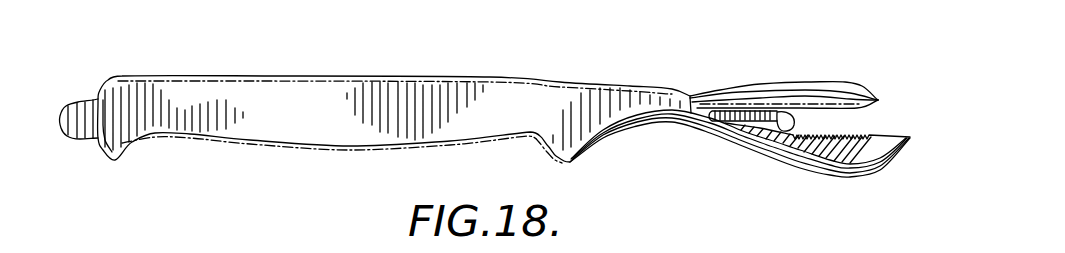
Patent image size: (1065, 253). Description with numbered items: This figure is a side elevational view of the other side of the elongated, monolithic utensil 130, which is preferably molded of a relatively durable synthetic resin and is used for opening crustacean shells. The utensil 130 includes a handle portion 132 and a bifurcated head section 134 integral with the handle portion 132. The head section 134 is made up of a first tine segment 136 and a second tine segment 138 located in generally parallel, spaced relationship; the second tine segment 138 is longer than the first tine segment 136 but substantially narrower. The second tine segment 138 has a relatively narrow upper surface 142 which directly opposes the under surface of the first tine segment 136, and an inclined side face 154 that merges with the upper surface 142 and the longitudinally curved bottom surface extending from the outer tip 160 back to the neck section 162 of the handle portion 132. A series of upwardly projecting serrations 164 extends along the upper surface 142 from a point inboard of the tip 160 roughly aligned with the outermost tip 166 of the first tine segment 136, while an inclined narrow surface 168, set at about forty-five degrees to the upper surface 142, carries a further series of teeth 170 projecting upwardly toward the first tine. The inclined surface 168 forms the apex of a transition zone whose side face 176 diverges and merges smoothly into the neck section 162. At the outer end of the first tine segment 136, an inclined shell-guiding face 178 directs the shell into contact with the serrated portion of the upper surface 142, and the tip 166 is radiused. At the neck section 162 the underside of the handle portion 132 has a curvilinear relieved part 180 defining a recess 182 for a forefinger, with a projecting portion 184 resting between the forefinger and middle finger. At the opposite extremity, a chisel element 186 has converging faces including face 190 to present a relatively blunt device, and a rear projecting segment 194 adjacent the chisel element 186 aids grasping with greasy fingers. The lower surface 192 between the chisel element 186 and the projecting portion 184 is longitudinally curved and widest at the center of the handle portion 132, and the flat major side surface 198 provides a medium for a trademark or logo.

The utensil 130 is at (483, 61).
The handle portion 132 is at (335, 73).
The bifurcated head section 134 is at (718, 84).
The first tine segment 136 is at (764, 78).
The second tine segment 138 is at (795, 176).
The upper surface 142 is at (886, 137).
The side face 154 is at (833, 153).
The outer tip 160 is at (910, 139).
The neck section 162 is at (681, 97).
The serrations 164 is at (829, 137).
The outermost tip 166 is at (880, 104).
The inclined narrow surface 168 is at (782, 125).
The serrations or teeth 170 is at (786, 131).
The side face 176 is at (748, 122).
The inclined shell-guiding face 178 is at (888, 105).
The curvilinear relieved part 180 is at (641, 125).
The recess 182 is at (645, 155).
The projecting portion 184 is at (568, 163).
The chisel element 186 is at (77, 142).
The face 190 is at (82, 108).
The lower surface 192 is at (348, 148).
The rear projecting segment 194 is at (113, 163).
The major side surface 198 is at (401, 88).